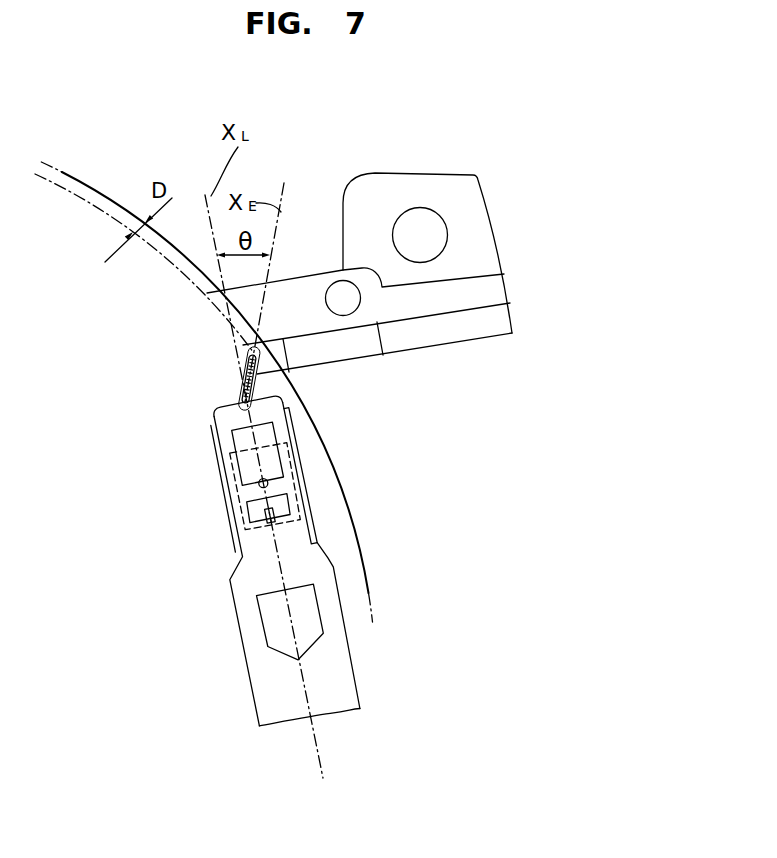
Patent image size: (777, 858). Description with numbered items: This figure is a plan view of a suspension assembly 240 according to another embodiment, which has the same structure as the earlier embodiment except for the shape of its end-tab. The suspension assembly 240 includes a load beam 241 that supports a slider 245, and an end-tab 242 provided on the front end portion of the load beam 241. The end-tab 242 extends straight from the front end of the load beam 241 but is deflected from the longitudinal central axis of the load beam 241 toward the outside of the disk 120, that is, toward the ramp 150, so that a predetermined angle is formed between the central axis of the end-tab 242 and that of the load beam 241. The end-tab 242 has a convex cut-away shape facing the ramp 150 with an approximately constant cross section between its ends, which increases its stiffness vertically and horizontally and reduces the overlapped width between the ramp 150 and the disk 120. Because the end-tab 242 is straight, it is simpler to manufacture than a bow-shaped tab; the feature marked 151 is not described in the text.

The disk 120 is at (355, 532).
The ramp 150 is at (308, 293).
The guide slot 151 is at (272, 362).
The suspension assembly 240 is at (249, 540).
The load beam 241 is at (246, 545).
The end-tab 242 is at (244, 393).
The slider 245 is at (293, 467).